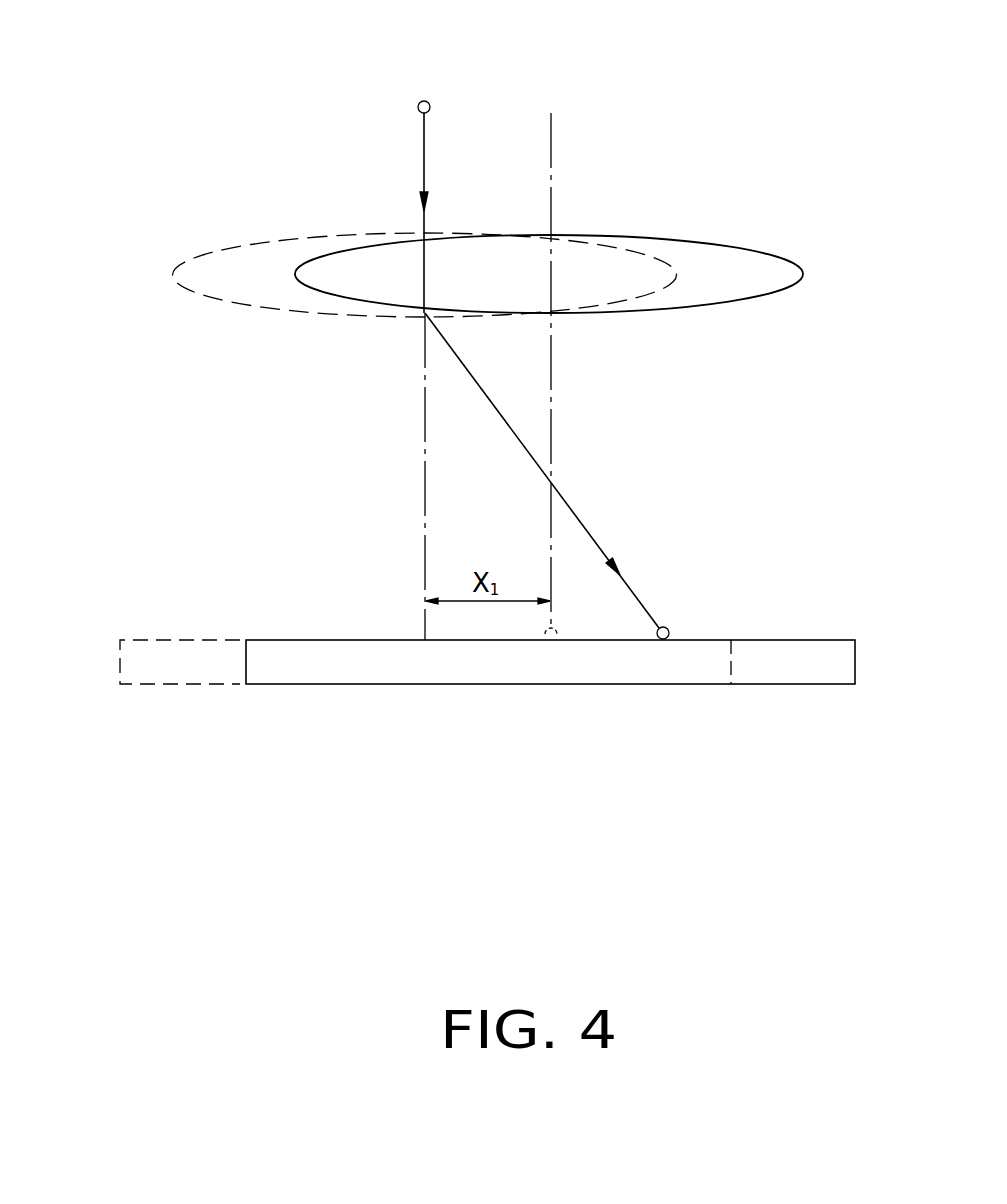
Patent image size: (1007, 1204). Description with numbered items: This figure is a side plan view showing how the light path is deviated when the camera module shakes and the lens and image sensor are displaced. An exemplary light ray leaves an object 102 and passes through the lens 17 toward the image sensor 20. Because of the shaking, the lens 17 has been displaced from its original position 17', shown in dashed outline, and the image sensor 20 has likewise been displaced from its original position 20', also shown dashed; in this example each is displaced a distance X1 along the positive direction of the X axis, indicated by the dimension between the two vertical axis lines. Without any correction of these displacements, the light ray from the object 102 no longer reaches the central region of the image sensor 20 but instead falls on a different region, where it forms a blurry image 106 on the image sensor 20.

The object 102 is at (426, 98).
The lens 17 is at (549, 257).
The original position of the lens 17' is at (412, 251).
The image sensor 20 is at (550, 713).
The original position of the image sensor 20' is at (152, 621).
The blurry image 106 is at (669, 626).